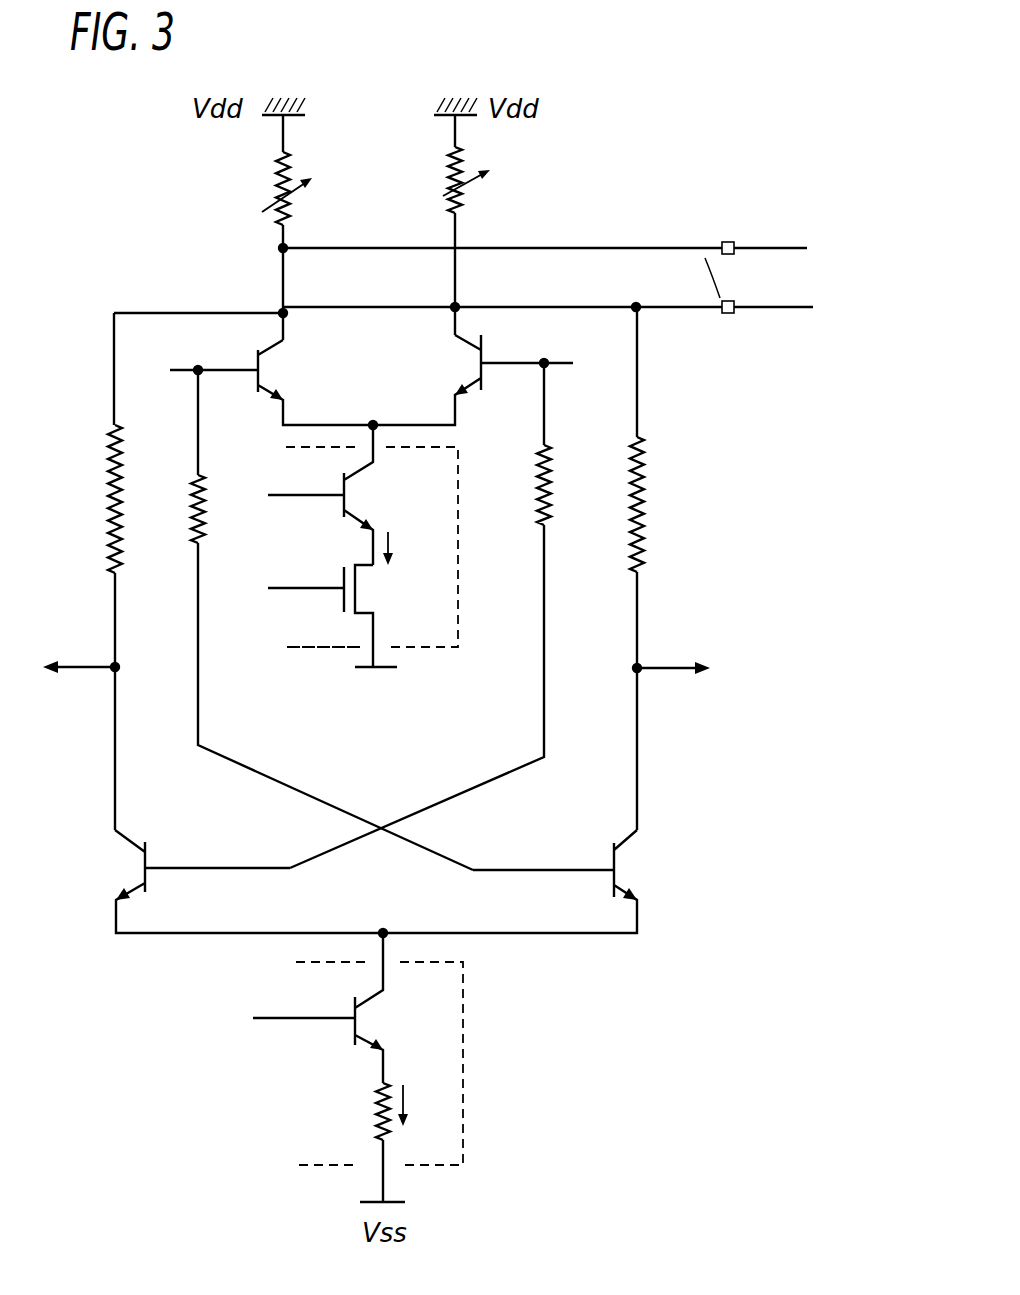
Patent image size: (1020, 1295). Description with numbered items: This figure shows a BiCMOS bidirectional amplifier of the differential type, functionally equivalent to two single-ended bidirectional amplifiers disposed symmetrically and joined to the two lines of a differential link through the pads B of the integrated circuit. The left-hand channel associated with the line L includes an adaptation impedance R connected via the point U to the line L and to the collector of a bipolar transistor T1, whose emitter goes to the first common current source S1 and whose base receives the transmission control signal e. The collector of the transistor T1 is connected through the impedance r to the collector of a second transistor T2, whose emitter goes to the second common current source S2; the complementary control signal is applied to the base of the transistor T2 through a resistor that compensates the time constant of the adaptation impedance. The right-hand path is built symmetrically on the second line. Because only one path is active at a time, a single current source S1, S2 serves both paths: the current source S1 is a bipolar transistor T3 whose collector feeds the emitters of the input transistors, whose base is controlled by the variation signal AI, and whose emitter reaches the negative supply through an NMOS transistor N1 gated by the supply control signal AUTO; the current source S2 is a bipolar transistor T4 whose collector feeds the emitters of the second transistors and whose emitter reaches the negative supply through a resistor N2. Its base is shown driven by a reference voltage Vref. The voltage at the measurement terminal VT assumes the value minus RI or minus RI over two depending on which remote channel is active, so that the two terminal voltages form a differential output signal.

The bipolar transistor T1 is at (292, 386).
The second transistor T2 is at (118, 879).
The bipolar transistor T3 is at (372, 500).
The bipolar transistor T4 is at (393, 1026).
The NMOS transistor N1 is at (378, 604).
The resistor N2 is at (376, 1118).
The adaptation impedance R is at (276, 185).
The impedance r is at (108, 515).
The first common current source S1 is at (460, 584).
The second common current source S2 is at (286, 1080).
The pads B is at (715, 237).
The line L is at (803, 228).
The point U is at (278, 310).
The transmission control signal e is at (209, 356).
The measurement terminal VT is at (91, 654).
The variation signal AI is at (282, 495).
The supply control signal AUTO is at (242, 572).
The reference voltage Vref is at (272, 1002).